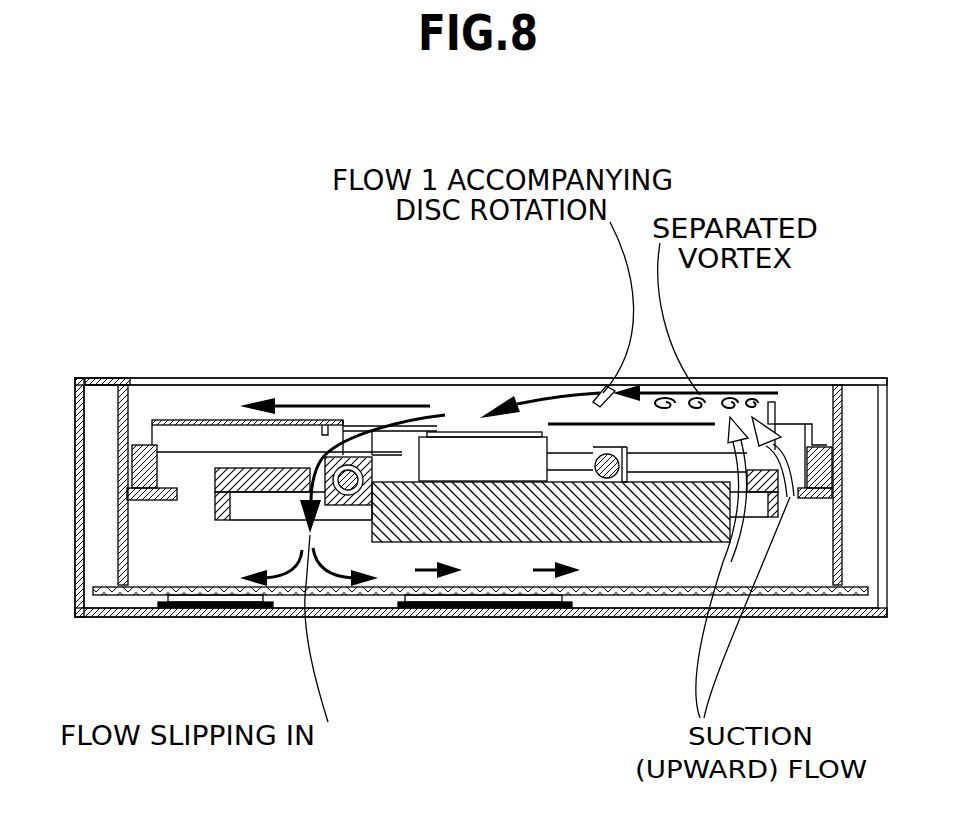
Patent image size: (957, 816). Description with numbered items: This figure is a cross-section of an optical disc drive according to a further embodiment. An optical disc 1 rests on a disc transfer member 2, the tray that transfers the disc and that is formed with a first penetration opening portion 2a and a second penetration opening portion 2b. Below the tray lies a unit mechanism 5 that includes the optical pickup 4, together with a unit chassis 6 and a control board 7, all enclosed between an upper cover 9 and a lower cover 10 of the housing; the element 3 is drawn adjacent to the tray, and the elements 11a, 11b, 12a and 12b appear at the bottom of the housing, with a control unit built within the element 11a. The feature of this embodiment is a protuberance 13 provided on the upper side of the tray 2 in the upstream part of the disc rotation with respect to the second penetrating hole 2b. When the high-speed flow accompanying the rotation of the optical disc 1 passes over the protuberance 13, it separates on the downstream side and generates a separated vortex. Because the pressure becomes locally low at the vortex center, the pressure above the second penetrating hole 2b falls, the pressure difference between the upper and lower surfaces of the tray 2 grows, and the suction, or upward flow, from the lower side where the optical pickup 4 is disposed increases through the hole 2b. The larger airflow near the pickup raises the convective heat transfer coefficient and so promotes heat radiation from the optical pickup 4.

The optical disc 1 is at (343, 422).
The disc transfer member 2 is at (175, 420).
The first penetration opening portion 2a is at (403, 440).
The second penetration opening portion 2b is at (735, 403).
The spindle motor 3 is at (455, 432).
The optical pickup 4 is at (380, 455).
The unit mechanism 5 is at (255, 480).
The unit chassis 6 is at (858, 388).
The control board 7 is at (790, 593).
The upper cover 9 is at (107, 378).
The lower cover 10 is at (100, 617).
The element 11a is at (400, 605).
The support member 11b is at (167, 598).
The damping member 12a is at (580, 602).
The damping member 12b is at (283, 603).
The protuberance 13 is at (775, 418).